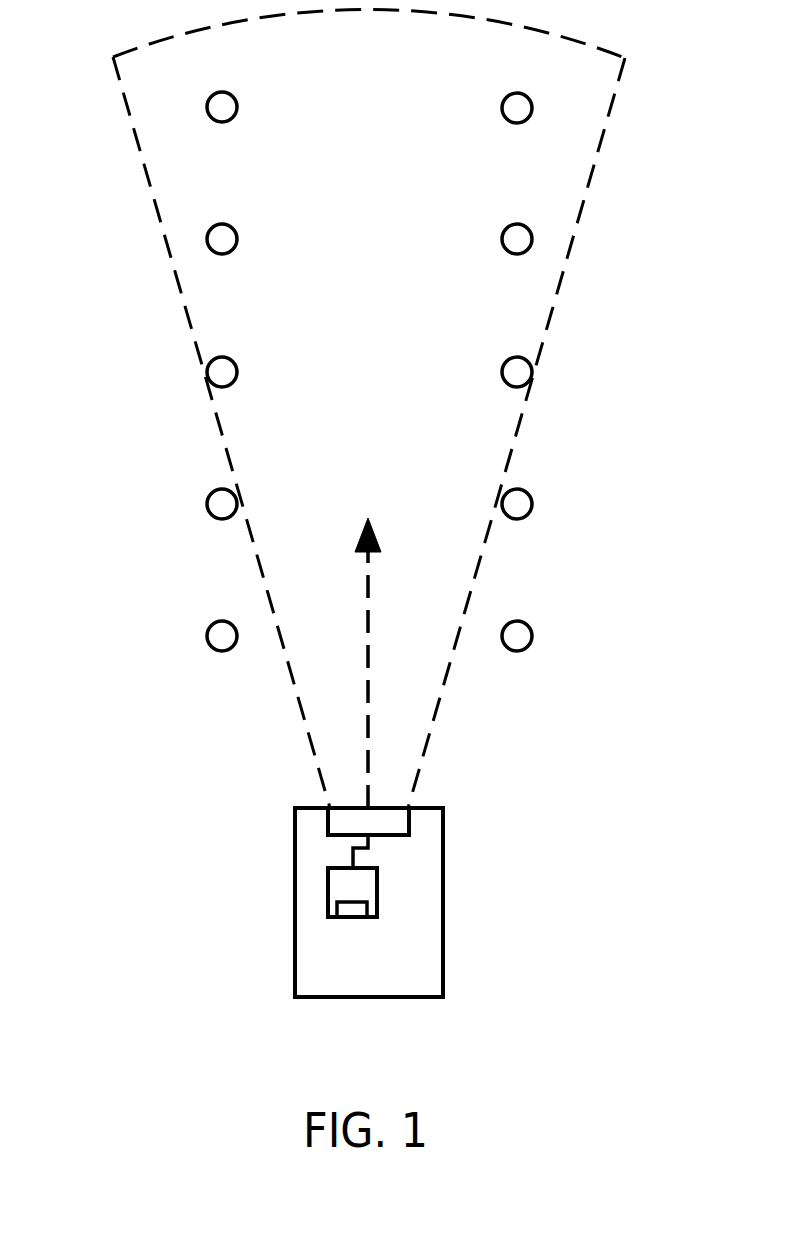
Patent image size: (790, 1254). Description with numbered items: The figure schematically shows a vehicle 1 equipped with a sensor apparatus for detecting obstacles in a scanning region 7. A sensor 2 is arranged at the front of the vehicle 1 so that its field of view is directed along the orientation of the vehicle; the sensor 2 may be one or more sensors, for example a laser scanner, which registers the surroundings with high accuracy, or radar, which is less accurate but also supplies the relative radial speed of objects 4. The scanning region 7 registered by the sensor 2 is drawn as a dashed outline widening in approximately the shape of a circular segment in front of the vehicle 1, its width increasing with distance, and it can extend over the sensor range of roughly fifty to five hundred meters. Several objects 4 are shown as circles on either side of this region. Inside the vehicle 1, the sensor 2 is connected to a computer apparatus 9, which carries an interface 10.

The vehicle 1 is at (443, 893).
The sensor 2 is at (335, 825).
The object 4 is at (207, 109).
The scanning region 7 is at (590, 174).
The computer apparatus 9 is at (340, 881).
The interface 10 is at (348, 912).